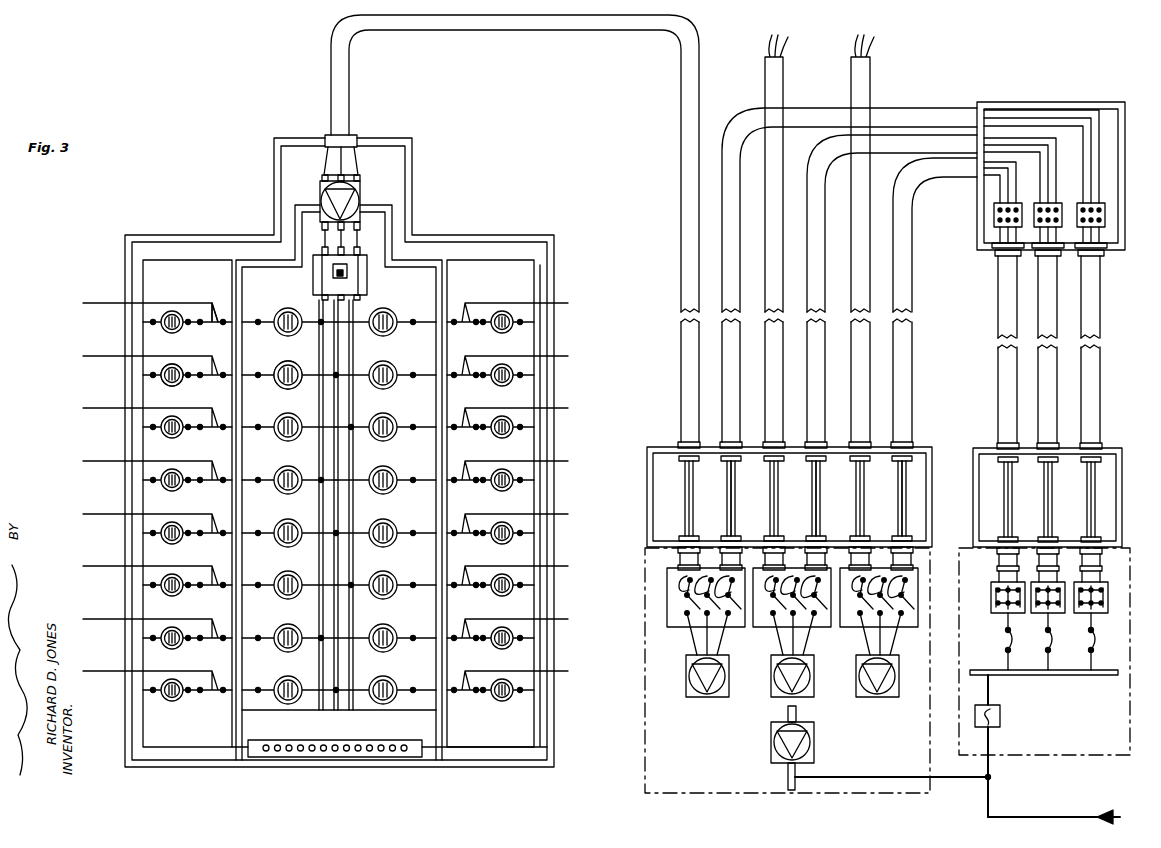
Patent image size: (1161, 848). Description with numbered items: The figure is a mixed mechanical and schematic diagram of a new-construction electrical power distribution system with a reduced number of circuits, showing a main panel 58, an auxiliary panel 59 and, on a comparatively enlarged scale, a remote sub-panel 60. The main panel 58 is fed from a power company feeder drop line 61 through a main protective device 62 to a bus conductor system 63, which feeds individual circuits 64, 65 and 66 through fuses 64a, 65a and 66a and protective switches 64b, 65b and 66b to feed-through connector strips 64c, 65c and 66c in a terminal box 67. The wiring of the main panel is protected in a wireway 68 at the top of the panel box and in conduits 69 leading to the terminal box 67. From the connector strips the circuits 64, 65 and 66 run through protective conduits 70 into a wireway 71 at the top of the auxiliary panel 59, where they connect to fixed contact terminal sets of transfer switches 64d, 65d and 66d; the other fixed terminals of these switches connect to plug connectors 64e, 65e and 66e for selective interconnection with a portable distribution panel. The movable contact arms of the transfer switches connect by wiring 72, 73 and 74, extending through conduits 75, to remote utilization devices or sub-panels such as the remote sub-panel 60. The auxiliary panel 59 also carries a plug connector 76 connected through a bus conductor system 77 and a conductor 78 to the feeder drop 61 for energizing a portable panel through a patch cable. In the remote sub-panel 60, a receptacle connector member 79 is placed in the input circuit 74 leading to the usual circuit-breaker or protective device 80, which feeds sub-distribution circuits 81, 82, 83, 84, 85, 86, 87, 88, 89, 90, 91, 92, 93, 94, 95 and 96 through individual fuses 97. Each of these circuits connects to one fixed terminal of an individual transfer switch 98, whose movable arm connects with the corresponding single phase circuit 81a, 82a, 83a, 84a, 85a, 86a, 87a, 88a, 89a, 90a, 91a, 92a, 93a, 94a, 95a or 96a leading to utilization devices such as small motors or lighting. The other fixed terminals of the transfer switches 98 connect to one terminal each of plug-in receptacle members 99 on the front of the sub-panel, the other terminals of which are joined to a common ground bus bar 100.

The main panel 58 is at (1100, 756).
The auxiliary panel 59 is at (645, 771).
The remote sub-panel 60 is at (535, 228).
The power company feeder drop line 61 is at (1040, 814).
The main protective device 62 is at (998, 710).
The bus conductor system 63 is at (1071, 676).
The individual circuit 64 is at (898, 489).
The fuse 64a is at (1006, 640).
The protective switch 64b is at (992, 583).
The feed-through connector strip 64c is at (1023, 205).
The transfer switch 64d is at (892, 630).
The plug connector 64e is at (891, 700).
The individual circuit 65 is at (824, 495).
The fuse 65a is at (1048, 640).
The protective switch 65b is at (1065, 582).
The feed-through connector strip 65c is at (1063, 198).
The transfer switch 65d is at (817, 630).
The plug connector 65e is at (810, 698).
The individual circuit 66 is at (738, 495).
The fuse 66a is at (1091, 640).
The protective switch 66b is at (1108, 608).
The feed-through connector strip 66c is at (1106, 205).
The transfer switch 66d is at (730, 630).
The plug connector 66e is at (720, 698).
The terminal box 67 is at (1120, 224).
The wireway 68 is at (1122, 480).
The conduits 69 is at (999, 403).
The protective conduits 70 is at (806, 110).
The wireway 71 is at (922, 447).
The wiring 72 is at (872, 520).
The wiring 73 is at (783, 520).
The wiring 74 is at (374, 159).
The conduits 75 is at (688, 111).
The plug connector 76 is at (814, 733).
The bus conductor system 77 is at (786, 770).
The conductor 78 is at (884, 774).
The receptacle connector member 79 is at (362, 196).
The circuit-breaker or protective device 80 is at (367, 283).
The sub-distribution circuit 81 is at (258, 320).
The sub-distribution circuit 82 is at (258, 373).
The sub-distribution circuit 83 is at (258, 425).
The sub-distribution circuit 84 is at (258, 478).
The sub-distribution circuit 85 is at (258, 531).
The sub-distribution circuit 86 is at (258, 583).
The sub-distribution circuit 87 is at (258, 636).
The sub-distribution circuit 88 is at (258, 688).
The single phase circuit 81a is at (94, 299).
The single phase circuit 82a is at (94, 352).
The single phase circuit 83a is at (94, 404).
The single phase circuit 84a is at (94, 457).
The single phase circuit 85a is at (94, 510).
The single phase circuit 86a is at (94, 562).
The single phase circuit 87a is at (94, 615).
The single phase circuit 88a is at (94, 667).
The sub-distribution circuit 89 is at (424, 314).
The sub-distribution circuit 90 is at (424, 367).
The sub-distribution circuit 91 is at (424, 419).
The sub-distribution circuit 92 is at (424, 472).
The sub-distribution circuit 93 is at (424, 525).
The sub-distribution circuit 94 is at (424, 577).
The sub-distribution circuit 95 is at (424, 630).
The sub-distribution circuit 96 is at (424, 682).
The single phase circuit 89a is at (565, 298).
The single phase circuit 90a is at (565, 351).
The single phase circuit 91a is at (565, 403).
The single phase circuit 92a is at (565, 456).
The single phase circuit 93a is at (565, 509).
The single phase circuit 94a is at (565, 561).
The single phase circuit 95a is at (565, 614).
The single phase circuit 96a is at (565, 666).
The fuse 97 is at (296, 338).
The transfer switch 98 is at (216, 306).
The plug-in receptacle member 99 is at (178, 392).
The common ground bus bar 100 is at (186, 259).